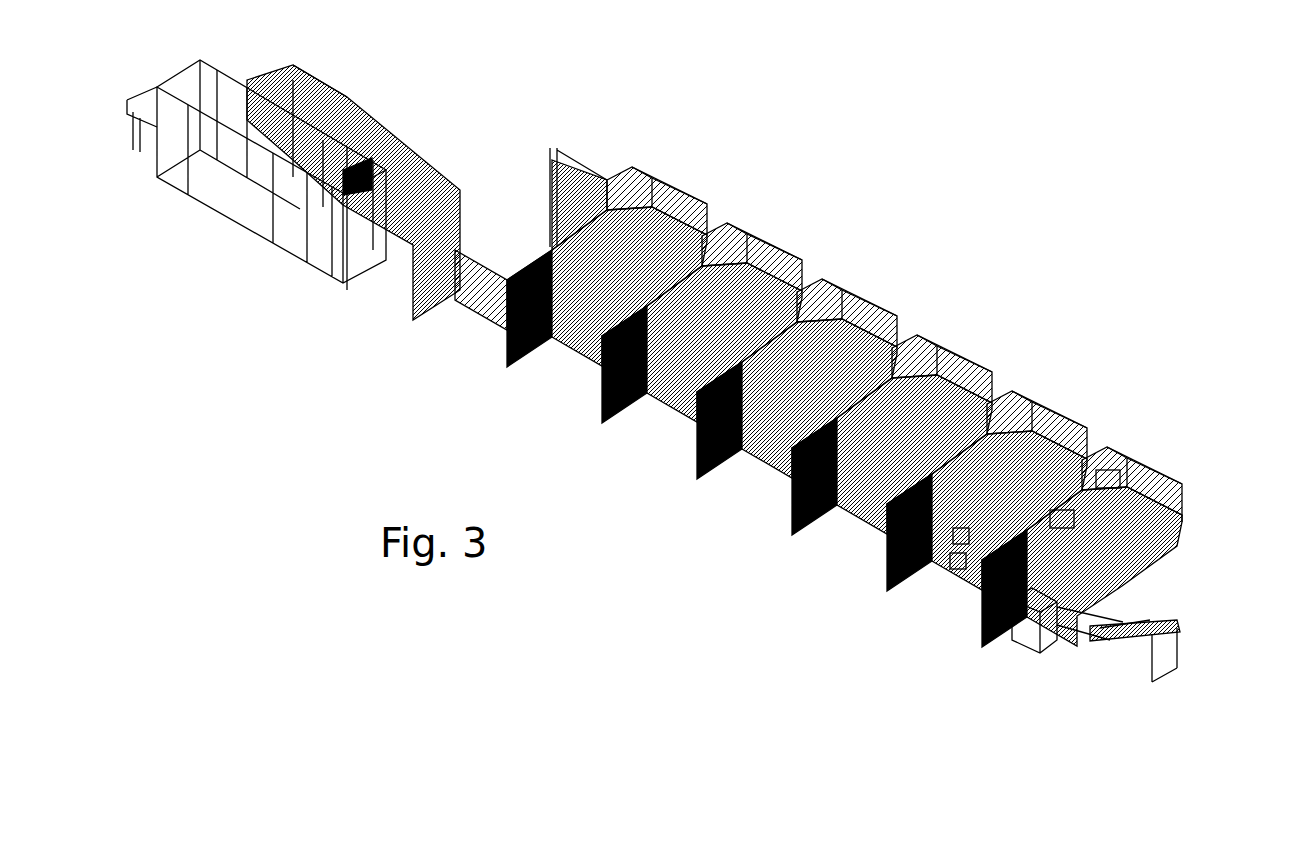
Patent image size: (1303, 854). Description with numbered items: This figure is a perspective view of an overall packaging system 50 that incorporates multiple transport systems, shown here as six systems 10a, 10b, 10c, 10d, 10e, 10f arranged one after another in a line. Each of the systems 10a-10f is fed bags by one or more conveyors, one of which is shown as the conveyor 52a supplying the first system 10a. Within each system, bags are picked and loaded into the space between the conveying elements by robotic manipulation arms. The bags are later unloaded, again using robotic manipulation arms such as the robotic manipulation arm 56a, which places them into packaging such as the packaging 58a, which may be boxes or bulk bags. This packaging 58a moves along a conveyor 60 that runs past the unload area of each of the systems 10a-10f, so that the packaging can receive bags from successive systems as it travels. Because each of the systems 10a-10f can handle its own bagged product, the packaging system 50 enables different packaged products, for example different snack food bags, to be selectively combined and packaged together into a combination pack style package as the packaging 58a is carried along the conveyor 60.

The packaging system 50 is at (703, 371).
The transport system 10a is at (1168, 454).
The transport system 10b is at (1072, 394).
The transport system 10c is at (973, 335).
The transport system 10d is at (884, 281).
The transport system 10e is at (801, 229).
The transport system 10f is at (702, 176).
The conveyor 52a is at (1108, 474).
The robotic manipulation arm 56a is at (962, 537).
The packaging 58a is at (960, 562).
The conveyor 60 is at (1096, 594).